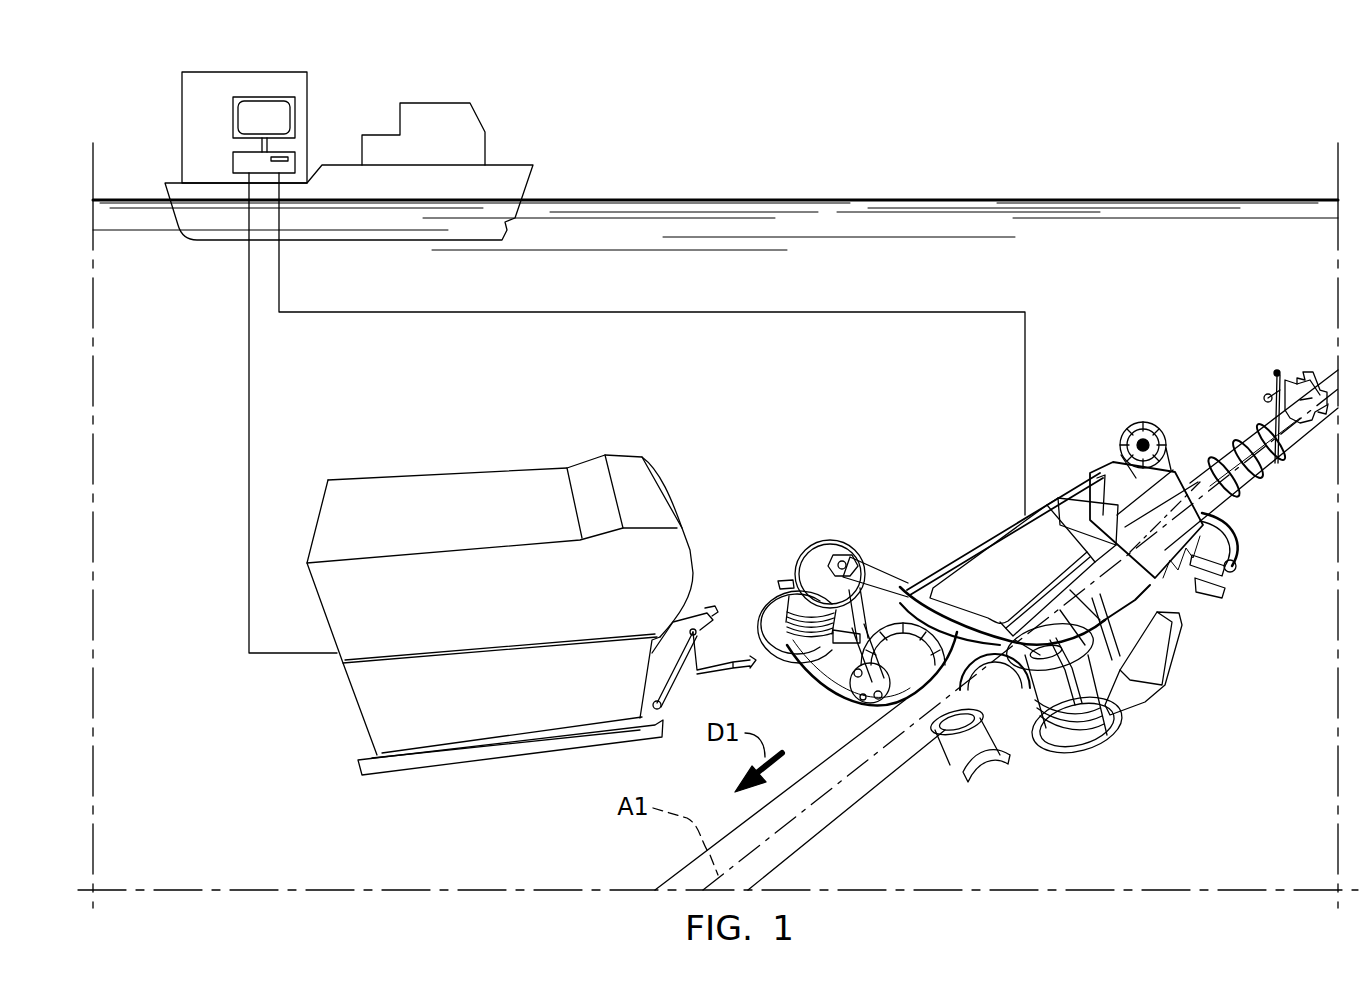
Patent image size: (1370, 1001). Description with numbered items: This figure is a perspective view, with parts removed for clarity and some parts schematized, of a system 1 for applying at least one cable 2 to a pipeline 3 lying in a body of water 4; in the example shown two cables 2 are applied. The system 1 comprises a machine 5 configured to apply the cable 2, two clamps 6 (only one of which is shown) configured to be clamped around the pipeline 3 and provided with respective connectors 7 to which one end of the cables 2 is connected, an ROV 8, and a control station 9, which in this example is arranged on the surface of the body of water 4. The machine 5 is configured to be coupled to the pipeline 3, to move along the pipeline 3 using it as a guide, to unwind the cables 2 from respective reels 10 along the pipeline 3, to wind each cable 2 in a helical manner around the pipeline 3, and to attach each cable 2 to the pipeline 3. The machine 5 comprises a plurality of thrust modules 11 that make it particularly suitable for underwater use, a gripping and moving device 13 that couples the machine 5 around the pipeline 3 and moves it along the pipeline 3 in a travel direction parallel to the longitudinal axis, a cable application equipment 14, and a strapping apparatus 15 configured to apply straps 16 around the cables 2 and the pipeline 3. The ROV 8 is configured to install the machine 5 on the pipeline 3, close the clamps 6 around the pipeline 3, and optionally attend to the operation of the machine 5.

The system 1 is at (1043, 120).
The cable 2 is at (1252, 440).
The pipeline 3 is at (820, 822).
The body of water 4 is at (1168, 237).
The machine 5 is at (1072, 360).
The clamp 6 is at (1320, 377).
The connector 7 is at (1277, 370).
The ROV 8 is at (458, 485).
The control station 9 is at (270, 110).
The reel 10 is at (783, 549).
The thrust module 11 is at (993, 563).
The gripping and moving device 13 is at (1182, 687).
The cable application equipment 14 is at (868, 540).
The strapping apparatus 15 is at (1143, 410).
The strap 16 is at (1237, 490).